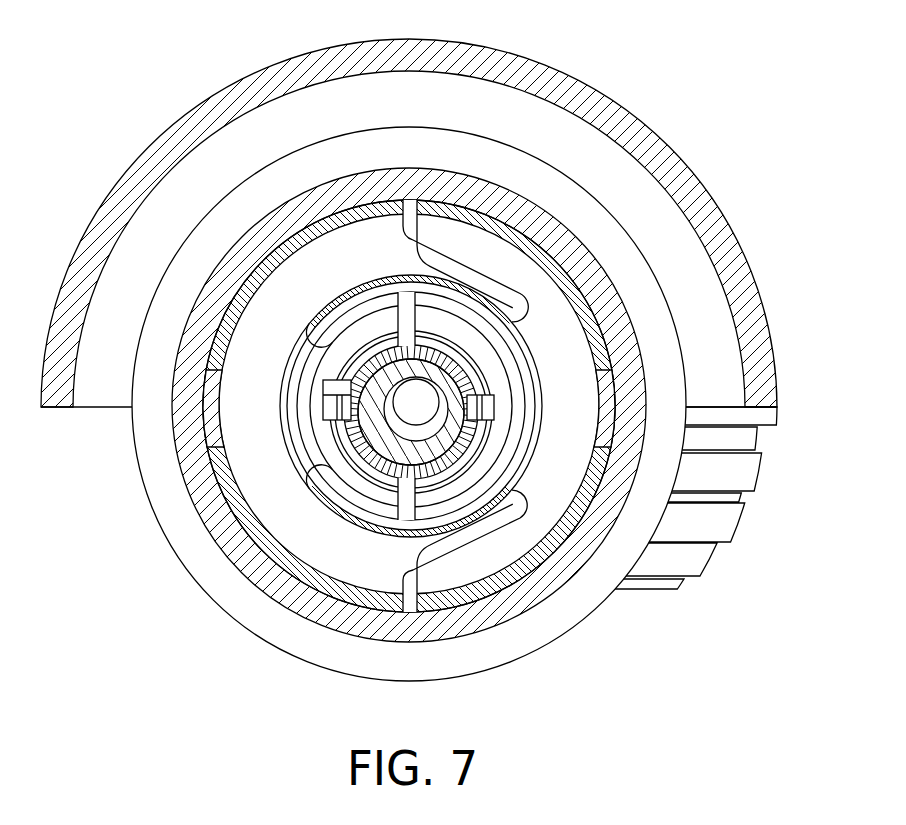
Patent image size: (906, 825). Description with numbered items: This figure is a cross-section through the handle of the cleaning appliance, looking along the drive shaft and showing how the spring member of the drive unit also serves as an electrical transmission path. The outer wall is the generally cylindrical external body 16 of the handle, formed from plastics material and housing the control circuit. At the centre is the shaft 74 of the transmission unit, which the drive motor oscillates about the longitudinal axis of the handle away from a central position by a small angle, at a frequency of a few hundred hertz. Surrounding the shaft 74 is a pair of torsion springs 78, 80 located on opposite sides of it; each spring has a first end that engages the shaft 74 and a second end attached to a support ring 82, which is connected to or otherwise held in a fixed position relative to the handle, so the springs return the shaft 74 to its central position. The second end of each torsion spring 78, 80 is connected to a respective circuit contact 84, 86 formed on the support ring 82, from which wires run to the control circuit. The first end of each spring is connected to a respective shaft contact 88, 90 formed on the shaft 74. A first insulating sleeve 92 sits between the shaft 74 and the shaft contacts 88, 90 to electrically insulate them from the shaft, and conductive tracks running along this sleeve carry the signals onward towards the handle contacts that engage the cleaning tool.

The external body 16 is at (753, 303).
The shaft 74 is at (463, 428).
The torsion spring 78 is at (322, 517).
The torsion spring 80 is at (350, 268).
The support ring 82 is at (197, 500).
The circuit contact 84 is at (462, 600).
The circuit contact 86 is at (386, 210).
The shaft contact 88 is at (443, 430).
The shaft contact 90 is at (330, 368).
The first insulating sleeve 92 is at (478, 381).